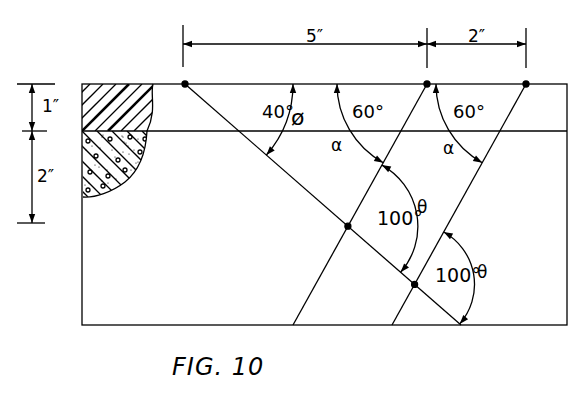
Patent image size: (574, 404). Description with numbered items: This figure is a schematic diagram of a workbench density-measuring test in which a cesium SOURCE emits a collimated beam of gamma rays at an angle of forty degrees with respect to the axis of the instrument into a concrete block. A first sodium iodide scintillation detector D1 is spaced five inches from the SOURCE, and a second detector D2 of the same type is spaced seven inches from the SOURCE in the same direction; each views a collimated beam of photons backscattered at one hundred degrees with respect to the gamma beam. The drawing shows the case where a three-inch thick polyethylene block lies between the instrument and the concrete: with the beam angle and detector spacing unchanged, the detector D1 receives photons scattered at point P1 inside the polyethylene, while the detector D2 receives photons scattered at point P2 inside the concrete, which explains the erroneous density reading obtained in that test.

The source SOURCE is at (178, 78).
The first scintillation detector D1 is at (361, 192).
The second detector D2 is at (473, 192).
The first scattering point P1 is at (333, 231).
The second scattering point P2 is at (400, 288).